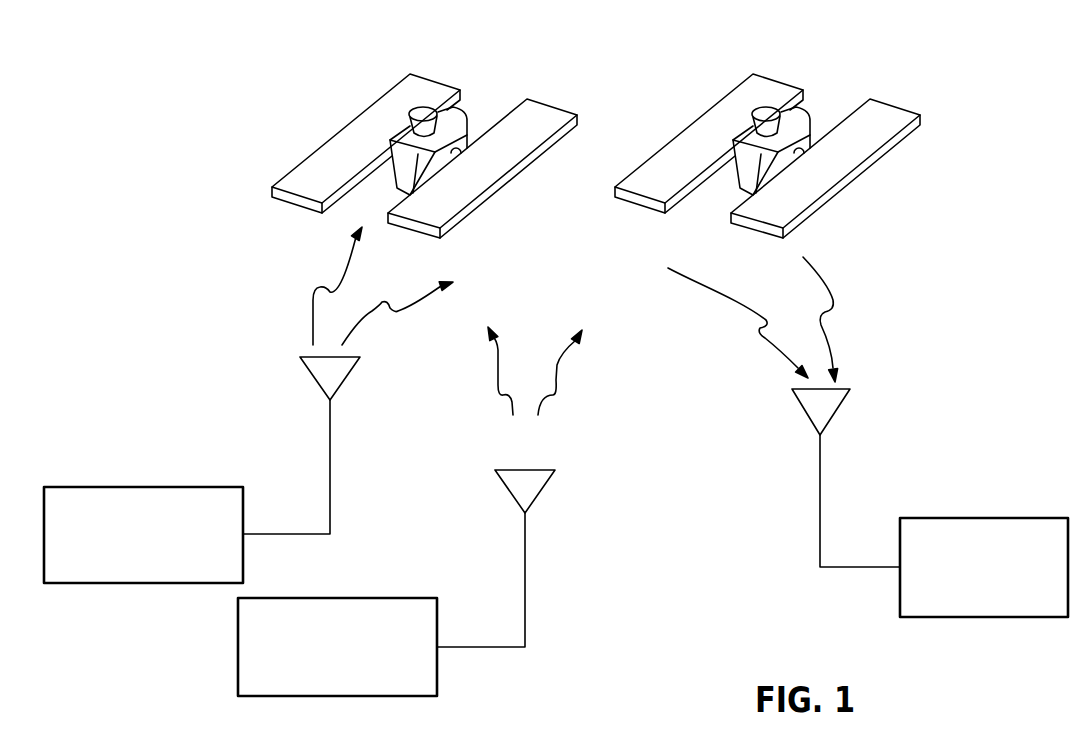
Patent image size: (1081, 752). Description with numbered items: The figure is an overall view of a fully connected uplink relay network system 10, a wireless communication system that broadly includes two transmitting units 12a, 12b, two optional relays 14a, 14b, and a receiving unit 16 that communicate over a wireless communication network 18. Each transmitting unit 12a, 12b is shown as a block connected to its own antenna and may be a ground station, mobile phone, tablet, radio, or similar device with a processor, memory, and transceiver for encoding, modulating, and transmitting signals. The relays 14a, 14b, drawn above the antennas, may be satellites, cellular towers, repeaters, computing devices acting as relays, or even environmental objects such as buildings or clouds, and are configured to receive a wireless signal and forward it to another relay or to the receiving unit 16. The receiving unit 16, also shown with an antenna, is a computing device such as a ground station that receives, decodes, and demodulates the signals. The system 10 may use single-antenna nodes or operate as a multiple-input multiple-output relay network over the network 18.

The uplink relay network system 10 is at (1048, 88).
The transmitting unit 12a is at (143, 585).
The transmitting unit 12b is at (338, 697).
The relay 14a is at (318, 105).
The relay 14b is at (870, 200).
The receiving unit 16 is at (985, 618).
The wireless communication network 18 is at (177, 192).